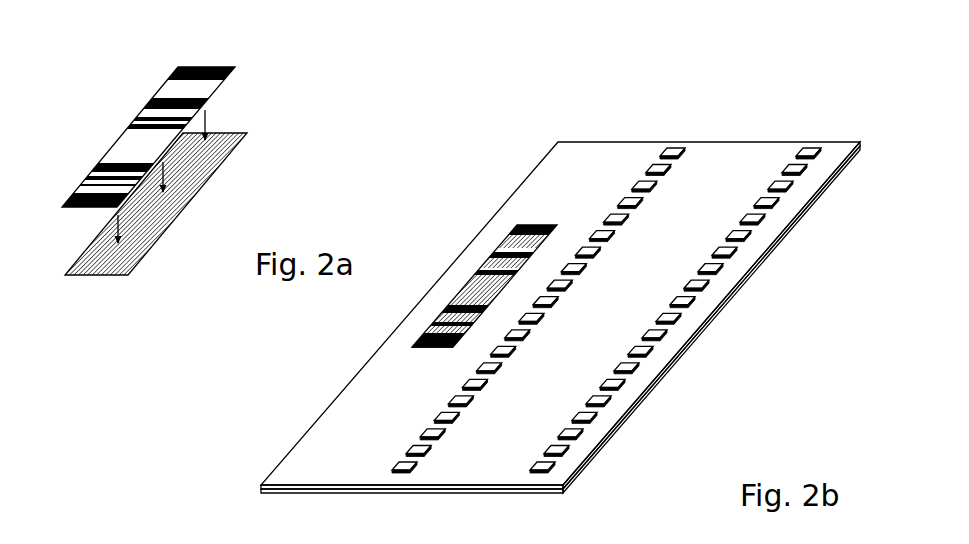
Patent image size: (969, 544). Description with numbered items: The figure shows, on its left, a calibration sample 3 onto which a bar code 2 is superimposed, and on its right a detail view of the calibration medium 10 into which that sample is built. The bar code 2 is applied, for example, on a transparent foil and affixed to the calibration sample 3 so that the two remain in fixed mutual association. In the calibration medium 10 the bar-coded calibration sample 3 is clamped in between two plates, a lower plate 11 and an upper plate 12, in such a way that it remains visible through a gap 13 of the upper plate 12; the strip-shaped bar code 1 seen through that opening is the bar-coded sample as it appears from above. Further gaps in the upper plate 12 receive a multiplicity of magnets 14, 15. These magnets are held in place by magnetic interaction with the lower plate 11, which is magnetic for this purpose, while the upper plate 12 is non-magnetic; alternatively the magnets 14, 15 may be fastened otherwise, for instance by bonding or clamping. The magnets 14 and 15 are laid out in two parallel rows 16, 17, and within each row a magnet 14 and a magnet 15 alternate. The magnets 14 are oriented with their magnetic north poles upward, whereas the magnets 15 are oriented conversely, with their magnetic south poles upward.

In FIG. 2B, the bar code 1 is at (539, 225).
In FIG. 2A, the bar code 2 is at (178, 65).
In FIG. 2A, the calibration sample 3 is at (223, 167).
In FIG. 2B, the calibration medium 10 is at (514, 170).
In FIG. 2B, the lower plate 11 is at (512, 493).
In FIG. 2B, the upper plate 12 is at (552, 490).
In FIG. 2B, the gap 13 is at (422, 350).
In FIG. 2B, the magnet 14 is at (669, 167).
In FIG. 2B, the magnet 15 is at (683, 151).
In FIG. 2B, the row 16 is at (689, 138).
In FIG. 2B, the row 17 is at (826, 138).